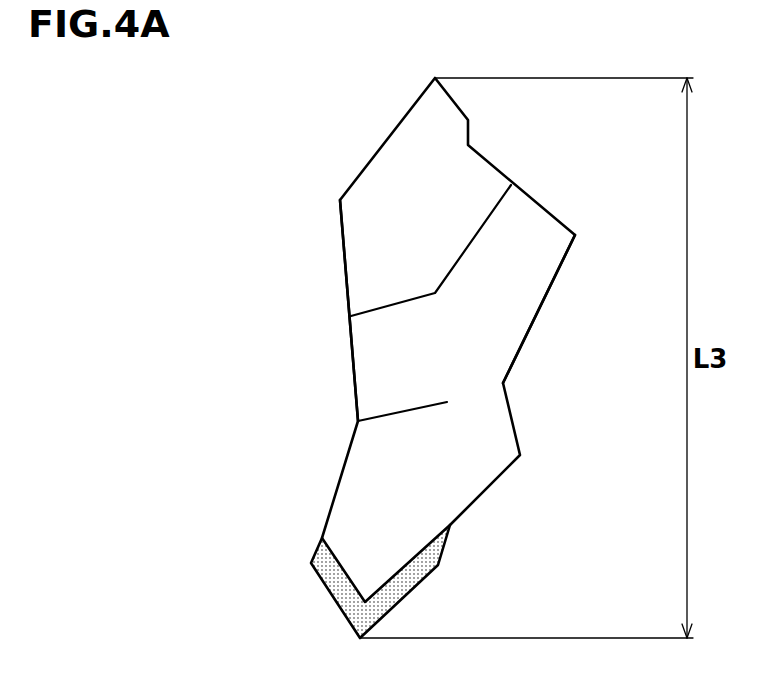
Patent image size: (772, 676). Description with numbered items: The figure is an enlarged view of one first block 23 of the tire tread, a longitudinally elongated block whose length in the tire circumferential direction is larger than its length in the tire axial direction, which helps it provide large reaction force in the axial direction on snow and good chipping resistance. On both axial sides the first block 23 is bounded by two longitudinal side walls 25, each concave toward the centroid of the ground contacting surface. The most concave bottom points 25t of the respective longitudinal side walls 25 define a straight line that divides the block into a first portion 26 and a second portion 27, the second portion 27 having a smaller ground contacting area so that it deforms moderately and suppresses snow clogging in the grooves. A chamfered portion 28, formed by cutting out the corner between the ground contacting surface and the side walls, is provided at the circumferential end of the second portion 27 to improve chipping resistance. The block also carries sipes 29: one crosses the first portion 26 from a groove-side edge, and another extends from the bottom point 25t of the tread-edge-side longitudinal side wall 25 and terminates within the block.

The first block 23 is at (417, 197).
The longitudinal side wall 25 is at (351, 348).
The most concave bottom point 25t is at (358, 421).
The first portion 26 is at (418, 283).
The second portion 27 is at (386, 493).
The chamfered portion 28 is at (338, 583).
The sipe 29 is at (475, 240).